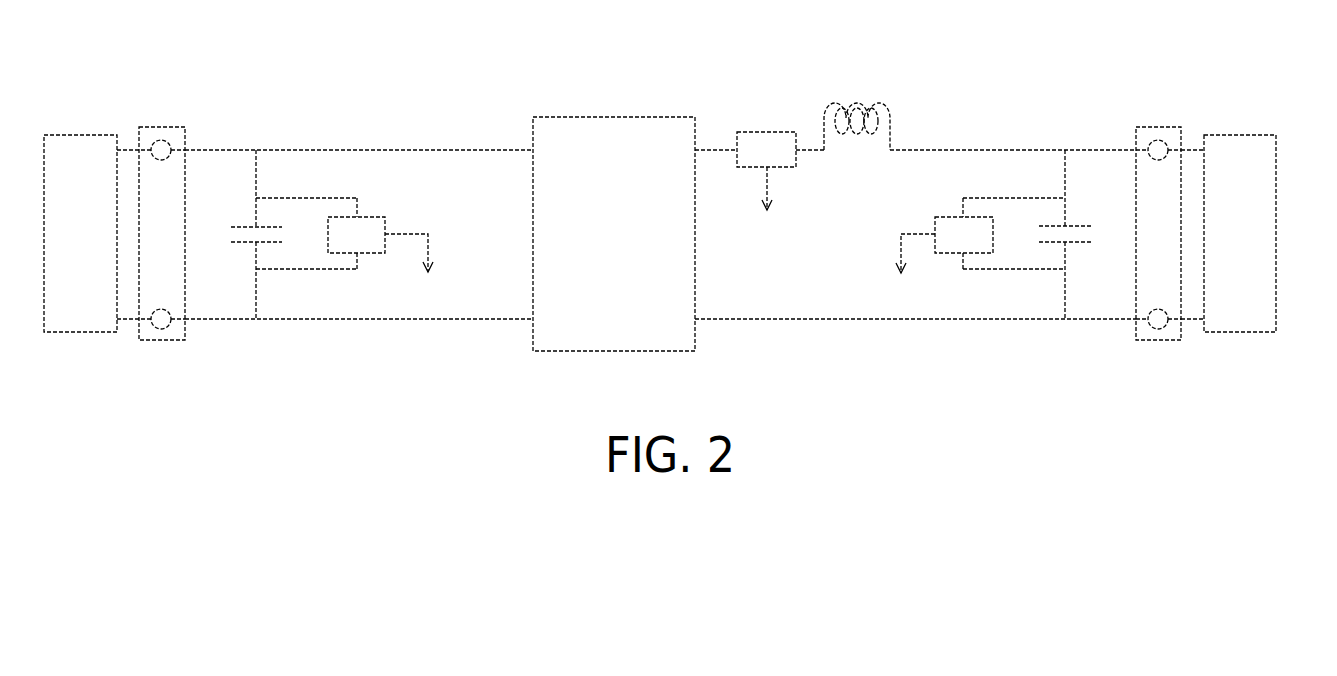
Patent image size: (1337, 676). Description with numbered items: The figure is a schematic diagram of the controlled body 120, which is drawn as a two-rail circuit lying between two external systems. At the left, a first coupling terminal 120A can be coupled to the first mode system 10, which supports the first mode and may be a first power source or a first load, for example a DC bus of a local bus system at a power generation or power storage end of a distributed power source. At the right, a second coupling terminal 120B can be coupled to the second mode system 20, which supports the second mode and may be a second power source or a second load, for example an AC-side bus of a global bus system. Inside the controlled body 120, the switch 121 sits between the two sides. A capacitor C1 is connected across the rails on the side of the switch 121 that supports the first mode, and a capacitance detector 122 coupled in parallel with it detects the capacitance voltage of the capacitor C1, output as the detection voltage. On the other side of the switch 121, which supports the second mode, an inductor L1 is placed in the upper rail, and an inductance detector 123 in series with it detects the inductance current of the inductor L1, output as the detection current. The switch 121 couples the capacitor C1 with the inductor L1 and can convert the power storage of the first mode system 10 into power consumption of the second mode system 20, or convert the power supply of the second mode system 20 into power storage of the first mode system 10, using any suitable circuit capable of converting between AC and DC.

The first mode system 10 is at (94, 245).
The second mode system 20 is at (1255, 245).
The controlled body 120 is at (660, 195).
The first coupling terminal 120A is at (161, 340).
The second coupling terminal 120B is at (1158, 340).
The switch 121 is at (636, 248).
The capacitance detector 122 is at (378, 249).
The inductance detector 123 is at (788, 163).
The capacitor C1 is at (254, 234).
The inductor L1 is at (857, 135).